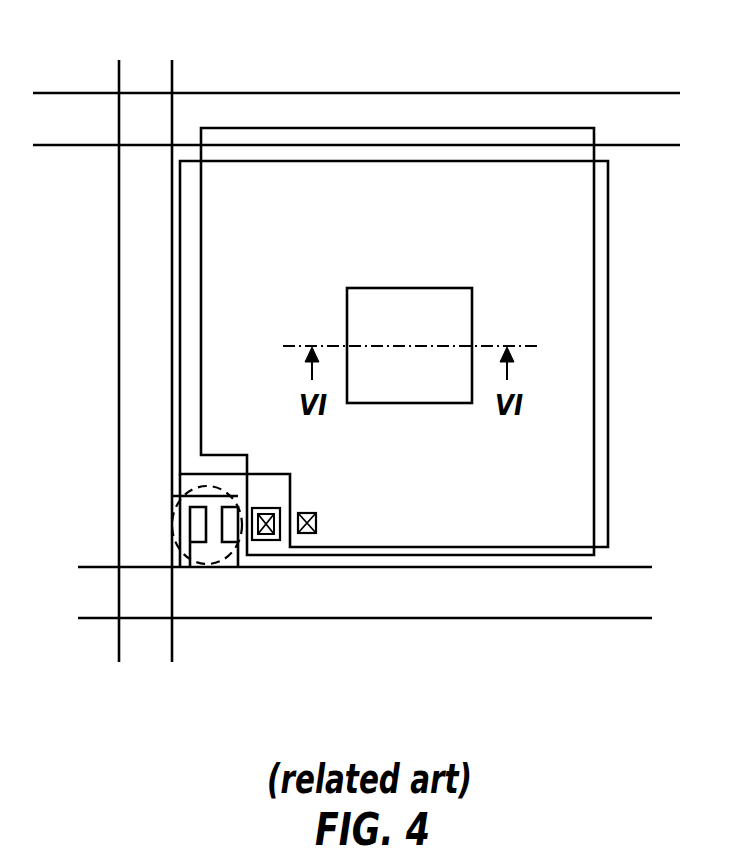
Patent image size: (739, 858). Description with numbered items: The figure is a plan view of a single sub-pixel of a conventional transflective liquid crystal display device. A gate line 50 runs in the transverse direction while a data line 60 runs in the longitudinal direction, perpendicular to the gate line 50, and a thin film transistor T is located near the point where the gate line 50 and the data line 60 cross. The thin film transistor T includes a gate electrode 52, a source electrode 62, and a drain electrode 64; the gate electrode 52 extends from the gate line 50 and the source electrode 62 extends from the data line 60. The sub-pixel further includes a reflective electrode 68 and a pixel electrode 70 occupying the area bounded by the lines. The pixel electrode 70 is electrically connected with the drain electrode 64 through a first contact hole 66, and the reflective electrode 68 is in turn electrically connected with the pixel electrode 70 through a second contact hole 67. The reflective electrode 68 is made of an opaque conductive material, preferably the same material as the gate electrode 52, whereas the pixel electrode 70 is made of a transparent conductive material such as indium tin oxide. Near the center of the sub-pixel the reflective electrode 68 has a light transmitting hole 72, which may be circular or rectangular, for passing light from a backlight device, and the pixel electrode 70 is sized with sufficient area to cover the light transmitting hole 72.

The gate line 50 is at (469, 601).
The gate electrode 52 is at (212, 555).
The data line 60 is at (138, 292).
The source electrode 62 is at (144, 555).
The drain electrode 64 is at (226, 556).
The first contact hole 66 is at (264, 541).
The second contact hole 67 is at (309, 534).
The reflective electrode 68 is at (609, 317).
The pixel electrode 70 is at (596, 243).
The light transmitting hole 72 is at (415, 305).
The thin film transistor T is at (178, 499).